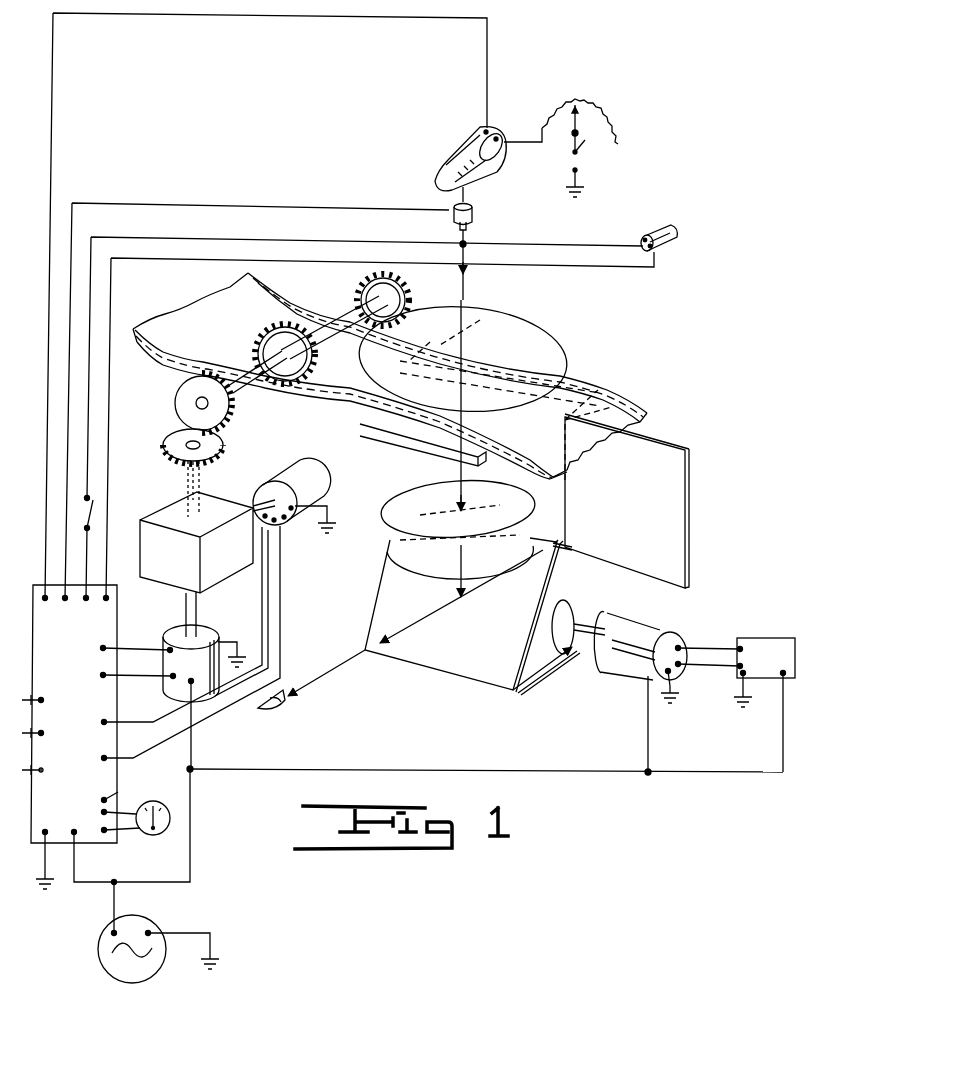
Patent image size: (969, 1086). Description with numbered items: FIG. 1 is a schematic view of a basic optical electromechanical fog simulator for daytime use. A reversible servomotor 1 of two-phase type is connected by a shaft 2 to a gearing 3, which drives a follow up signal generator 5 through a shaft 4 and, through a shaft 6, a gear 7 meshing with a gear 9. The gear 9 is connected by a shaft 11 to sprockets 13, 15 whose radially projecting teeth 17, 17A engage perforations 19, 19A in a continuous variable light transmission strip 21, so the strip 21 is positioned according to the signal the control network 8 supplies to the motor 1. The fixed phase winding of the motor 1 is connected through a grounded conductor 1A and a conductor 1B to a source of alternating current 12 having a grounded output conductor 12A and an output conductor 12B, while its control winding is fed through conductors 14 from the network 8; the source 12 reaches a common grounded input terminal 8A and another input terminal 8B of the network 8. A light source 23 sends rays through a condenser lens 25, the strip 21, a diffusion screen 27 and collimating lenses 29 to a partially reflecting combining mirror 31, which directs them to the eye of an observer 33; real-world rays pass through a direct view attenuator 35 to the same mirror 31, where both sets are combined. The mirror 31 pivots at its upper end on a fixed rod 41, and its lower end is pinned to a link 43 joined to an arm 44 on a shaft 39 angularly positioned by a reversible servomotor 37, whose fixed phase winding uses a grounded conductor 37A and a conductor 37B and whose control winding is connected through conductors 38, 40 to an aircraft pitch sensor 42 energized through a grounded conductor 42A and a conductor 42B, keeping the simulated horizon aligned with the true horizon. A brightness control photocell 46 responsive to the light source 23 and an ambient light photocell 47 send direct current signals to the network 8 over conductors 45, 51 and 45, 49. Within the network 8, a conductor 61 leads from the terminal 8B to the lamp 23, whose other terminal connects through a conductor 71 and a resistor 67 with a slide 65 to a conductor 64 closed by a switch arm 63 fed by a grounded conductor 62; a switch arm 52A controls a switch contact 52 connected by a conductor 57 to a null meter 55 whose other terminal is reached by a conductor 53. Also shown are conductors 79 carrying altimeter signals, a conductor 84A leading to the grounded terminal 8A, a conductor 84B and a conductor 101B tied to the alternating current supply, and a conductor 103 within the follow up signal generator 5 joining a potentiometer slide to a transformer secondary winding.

The conductor 61 is at (55, 93).
The conductor 51 is at (290, 204).
The conductor 45 is at (296, 238).
The conductor 49 is at (570, 267).
The switch arm 52A is at (90, 496).
The switch contact 52 is at (95, 520).
The conductor 57 is at (88, 566).
The light source 23 is at (478, 178).
The conductor 71 is at (520, 138).
The resistor 67 is at (591, 106).
The slide 65 is at (571, 122).
The conductor 64 is at (590, 143).
The switch arm 63 is at (582, 165).
The conductor 62 is at (562, 178).
The brightness control photocell 46 is at (472, 218).
The ambient light responsive photocell 47 is at (733, 218).
The continuous variable light transmission strip 21 is at (248, 190).
The perforations 19 is at (170, 362).
The perforations 19A is at (270, 300).
The teeth 17A is at (277, 299).
The sprocket 13 is at (262, 335).
The sprocket 15 is at (412, 292).
The teeth 17 is at (300, 390).
The shaft 11 is at (240, 395).
The gear 9 is at (172, 412).
The gear 7 is at (165, 460).
The shaft 6 is at (200, 480).
The gearing 3 is at (215, 580).
The conductor 103 is at (215, 583).
The shaft 2 is at (185, 601).
The reversible servomotor 1 is at (175, 690).
The grounded conductor 1A is at (224, 640).
The conductors 14 is at (133, 656).
The shaft 4 is at (262, 500).
The follow up signal generator 5 is at (318, 480).
The conductor 84A is at (312, 512).
The conductor 84B is at (281, 605).
The conductor 101B is at (284, 637).
The condenser lens 25 is at (535, 335).
The diffusion screen 27 is at (425, 452).
The collimating lenses 29 is at (382, 520).
The combining mirror 31 is at (495, 700).
The observer 33 is at (273, 714).
The direct view attenuator 35 is at (612, 548).
The rod 41 is at (557, 540).
The shaft 39 is at (580, 628).
The reversible servomotor 37 is at (630, 683).
The conductor 40 is at (677, 690).
The grounded conductor 37A is at (648, 700).
The conductor 37B is at (580, 780).
The arm 44 is at (568, 652).
The link 43 is at (540, 660).
The aircraft pitch sensor 42 is at (770, 690).
The conductors 38 is at (695, 650).
The grounded conductor 42A is at (735, 695).
The conductor 42B is at (785, 734).
The control network 8 is at (74, 714).
The conductors 79 is at (40, 768).
The input terminal 8B is at (74, 830).
The grounded input terminal 8A is at (35, 870).
The conductor 53 is at (135, 810).
The null meter 55 is at (160, 842).
The conductor 1B is at (192, 822).
The source of alternating current 12 is at (133, 986).
The output conductor 12B is at (113, 905).
The grounded output conductor 12A is at (180, 933).